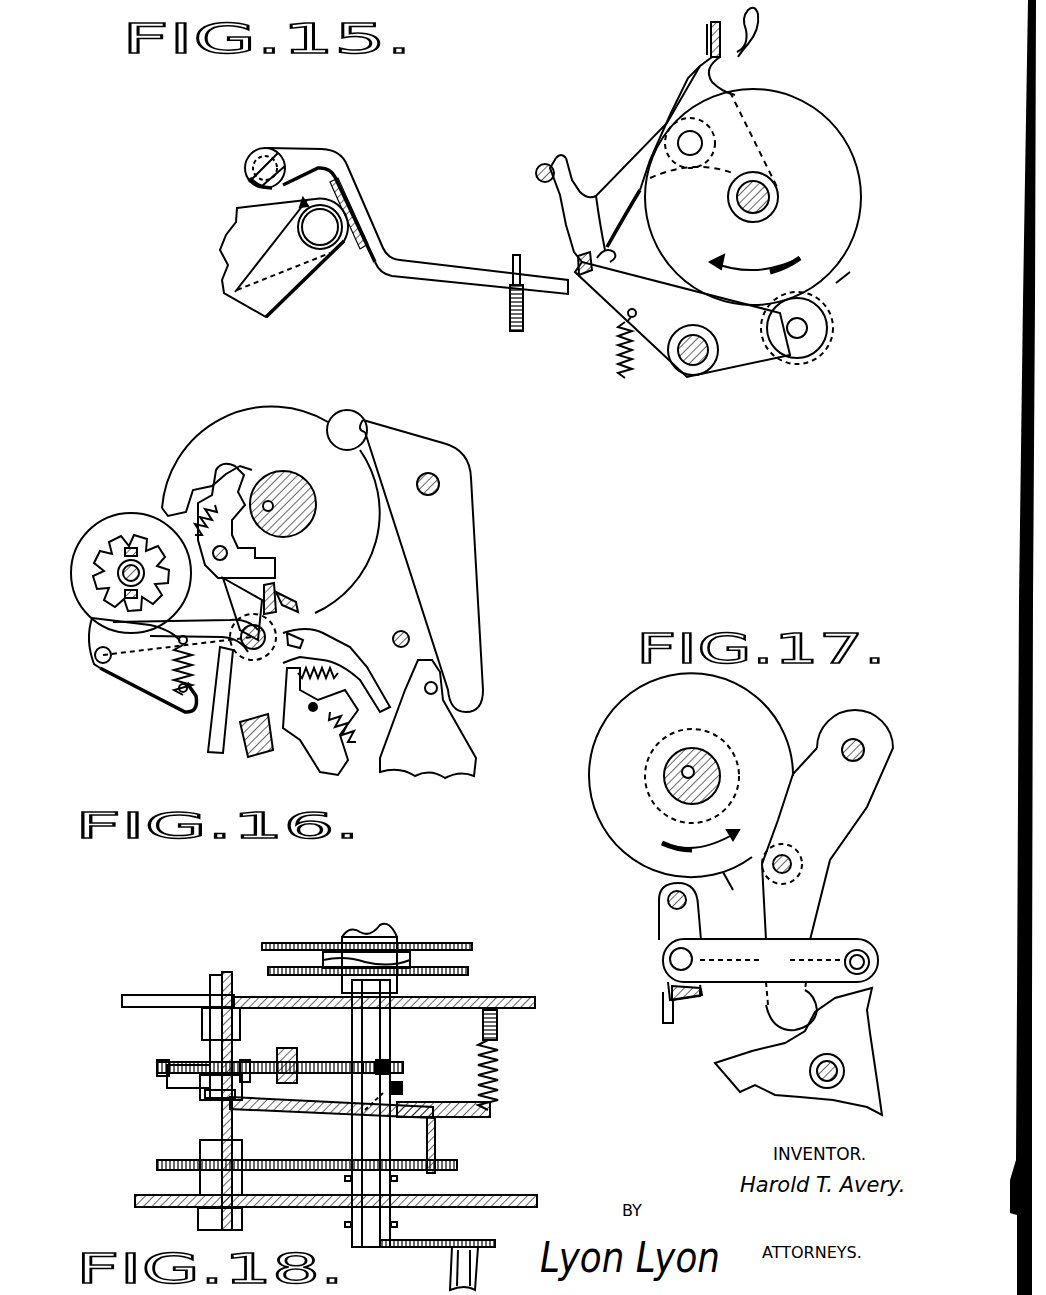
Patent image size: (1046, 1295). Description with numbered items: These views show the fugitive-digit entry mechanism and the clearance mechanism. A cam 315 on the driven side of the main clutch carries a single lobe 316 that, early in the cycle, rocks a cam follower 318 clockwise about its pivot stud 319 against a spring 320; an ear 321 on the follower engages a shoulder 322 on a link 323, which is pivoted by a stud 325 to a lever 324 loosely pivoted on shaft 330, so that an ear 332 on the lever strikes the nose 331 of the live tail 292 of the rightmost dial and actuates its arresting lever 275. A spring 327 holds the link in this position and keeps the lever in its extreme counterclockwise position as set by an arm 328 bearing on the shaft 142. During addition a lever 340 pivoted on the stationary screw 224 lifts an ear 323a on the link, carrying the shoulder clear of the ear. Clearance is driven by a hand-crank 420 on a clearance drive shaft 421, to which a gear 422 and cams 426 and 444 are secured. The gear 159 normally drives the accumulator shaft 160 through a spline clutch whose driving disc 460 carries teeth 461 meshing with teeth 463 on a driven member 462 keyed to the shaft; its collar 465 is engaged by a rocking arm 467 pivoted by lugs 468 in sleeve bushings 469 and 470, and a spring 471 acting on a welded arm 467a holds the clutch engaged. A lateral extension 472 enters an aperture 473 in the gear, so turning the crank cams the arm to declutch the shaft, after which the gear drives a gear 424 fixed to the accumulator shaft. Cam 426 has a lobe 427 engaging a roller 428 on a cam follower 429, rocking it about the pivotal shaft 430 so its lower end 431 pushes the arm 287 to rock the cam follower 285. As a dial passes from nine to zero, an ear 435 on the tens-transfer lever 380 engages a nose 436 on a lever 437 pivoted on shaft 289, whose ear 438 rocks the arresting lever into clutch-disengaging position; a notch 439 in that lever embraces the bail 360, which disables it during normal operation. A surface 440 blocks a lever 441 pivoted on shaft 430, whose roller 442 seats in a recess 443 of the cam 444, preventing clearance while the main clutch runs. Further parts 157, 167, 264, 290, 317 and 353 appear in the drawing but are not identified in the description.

In FIG. 15, the shaft 142 is at (540, 167).
In FIG. 18, the collar 157 is at (396, 1083).
In FIG. 18, the gear 159 is at (163, 1062).
In FIG. 18, the accumulator shaft 160 is at (210, 1125).
In FIG. 18, the collar 167 is at (395, 1062).
In FIG. 15, the stationary screw 224 is at (256, 160).
In FIG. 16, the gear 264 is at (96, 540).
In FIG. 16, the arresting lever 275 is at (176, 712).
In FIG. 17, the cam follower 285 is at (782, 1095).
In FIG. 17, the arm 287 is at (875, 988).
In FIG. 16, the pivotal shaft 289 is at (212, 742).
In FIG. 17, the pivotal shaft 289 is at (658, 900).
In FIG. 16, the lug 290 is at (262, 754).
In FIG. 17, the lug 290 is at (666, 1018).
In FIG. 15, the live tail 292 is at (830, 39).
In FIG. 15, the cam 315 is at (812, 118).
In FIG. 15, the lobe 316 is at (846, 282).
In FIG. 15, the roller 317 is at (824, 352).
In FIG. 15, the cam follower 318 is at (738, 368).
In FIG. 15, the pivot stud 319 is at (688, 362).
In FIG. 15, the spring 320 is at (620, 366).
In FIG. 15, the ear 321 is at (584, 278).
In FIG. 15, the shoulder 322 is at (606, 250).
In FIG. 15, the link 323 is at (608, 182).
In FIG. 15, the ear 323a is at (514, 262).
In FIG. 15, the lever 324 is at (688, 70).
In FIG. 15, the stud 325 is at (668, 133).
In FIG. 15, the spring 327 is at (509, 310).
In FIG. 15, the arm 328 is at (560, 186).
In FIG. 15, the shaft 330 is at (770, 188).
In FIG. 15, the nose 331 is at (738, 44).
In FIG. 15, the ear 332 is at (709, 37).
In FIG. 15, the lever 340 is at (333, 157).
In FIG. 16, the pawl 353 is at (456, 752).
In FIG. 16, the bail 360 is at (295, 603).
In FIG. 16, the tens-transfer lever 380 is at (200, 500).
In FIG. 18, the hand-crank 420 is at (452, 1275).
In FIG. 16, the clearance drive shaft 421 is at (268, 500).
In FIG. 17, the clearance drive shaft 421 is at (686, 790).
In FIG. 18, the clearance drive shaft 421 is at (352, 1222).
In FIG. 18, the gear 422 is at (460, 1166).
In FIG. 18, the gear 424 is at (160, 1164).
In FIG. 17, the cam 426 is at (626, 786).
In FIG. 18, the cam 426 is at (470, 972).
In FIG. 17, the lobe 427 is at (729, 888).
In FIG. 17, the roller 428 is at (803, 866).
In FIG. 17, the cam follower 429 is at (836, 806).
In FIG. 16, the pivotal shaft 430 is at (442, 484).
In FIG. 17, the pivotal shaft 430 is at (855, 740).
In FIG. 17, the lower end 431 is at (790, 1016).
In FIG. 16, the ear 435 is at (192, 530).
In FIG. 16, the nose 436 is at (222, 582).
In FIG. 16, the lever 437 is at (292, 620).
In FIG. 16, the ear 438 is at (302, 641).
In FIG. 16, the notch 439 is at (300, 634).
In FIG. 16, the surface 440 is at (450, 708).
In FIG. 16, the lever 441 is at (466, 629).
In FIG. 16, the roller 442 is at (362, 422).
In FIG. 16, the recess 443 is at (334, 416).
In FIG. 16, the cam 444 is at (266, 398).
In FIG. 18, the cam 444 is at (495, 924).
In FIG. 18, the driving disc 460 is at (208, 1062).
In FIG. 18, the teeth 461 is at (166, 1086).
In FIG. 18, the driven member 462 is at (285, 1078).
In FIG. 18, the teeth 463 is at (165, 1073).
In FIG. 18, the collar 465 is at (212, 1095).
In FIG. 18, the rocking arm 467 is at (300, 1112).
In FIG. 18, the arm 467a is at (470, 1115).
In FIG. 18, the lugs 468 is at (362, 1112).
In FIG. 18, the sleeve bushing 469 is at (402, 1092).
In FIG. 18, the sleeve bushing 470 is at (436, 1140).
In FIG. 18, the spring 471 is at (500, 1058).
In FIG. 18, the lateral extension 472 is at (436, 1125).
In FIG. 18, the aperture 473 is at (440, 1163).